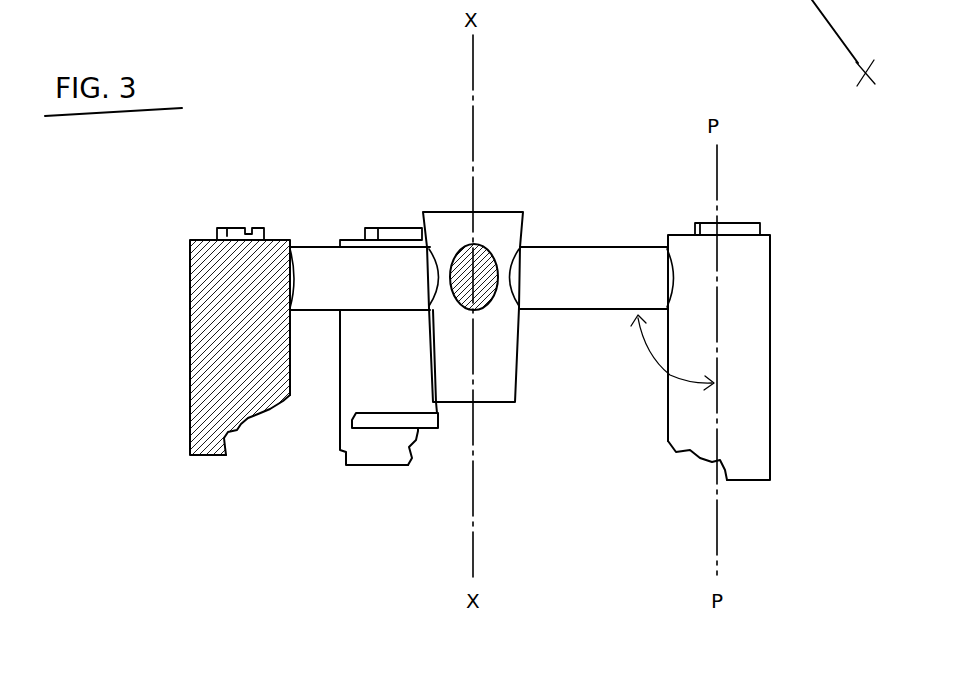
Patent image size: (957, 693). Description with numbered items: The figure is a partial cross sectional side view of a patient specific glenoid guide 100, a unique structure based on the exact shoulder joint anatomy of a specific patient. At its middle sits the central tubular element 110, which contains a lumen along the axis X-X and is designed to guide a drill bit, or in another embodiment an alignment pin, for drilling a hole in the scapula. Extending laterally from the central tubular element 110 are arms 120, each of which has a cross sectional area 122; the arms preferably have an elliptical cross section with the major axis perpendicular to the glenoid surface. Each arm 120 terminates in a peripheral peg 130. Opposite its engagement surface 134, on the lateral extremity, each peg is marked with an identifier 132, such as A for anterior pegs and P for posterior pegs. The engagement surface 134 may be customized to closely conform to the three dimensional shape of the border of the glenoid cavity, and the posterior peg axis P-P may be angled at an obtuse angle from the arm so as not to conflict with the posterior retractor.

The guide 100 is at (641, 86).
The central tubular element 110 is at (527, 220).
The arm 120 is at (308, 247).
The cross sectional area 122 is at (470, 277).
The peripheral peg 130 is at (187, 338).
The identifier 132 is at (215, 228).
The engagement surface 134 is at (238, 425).